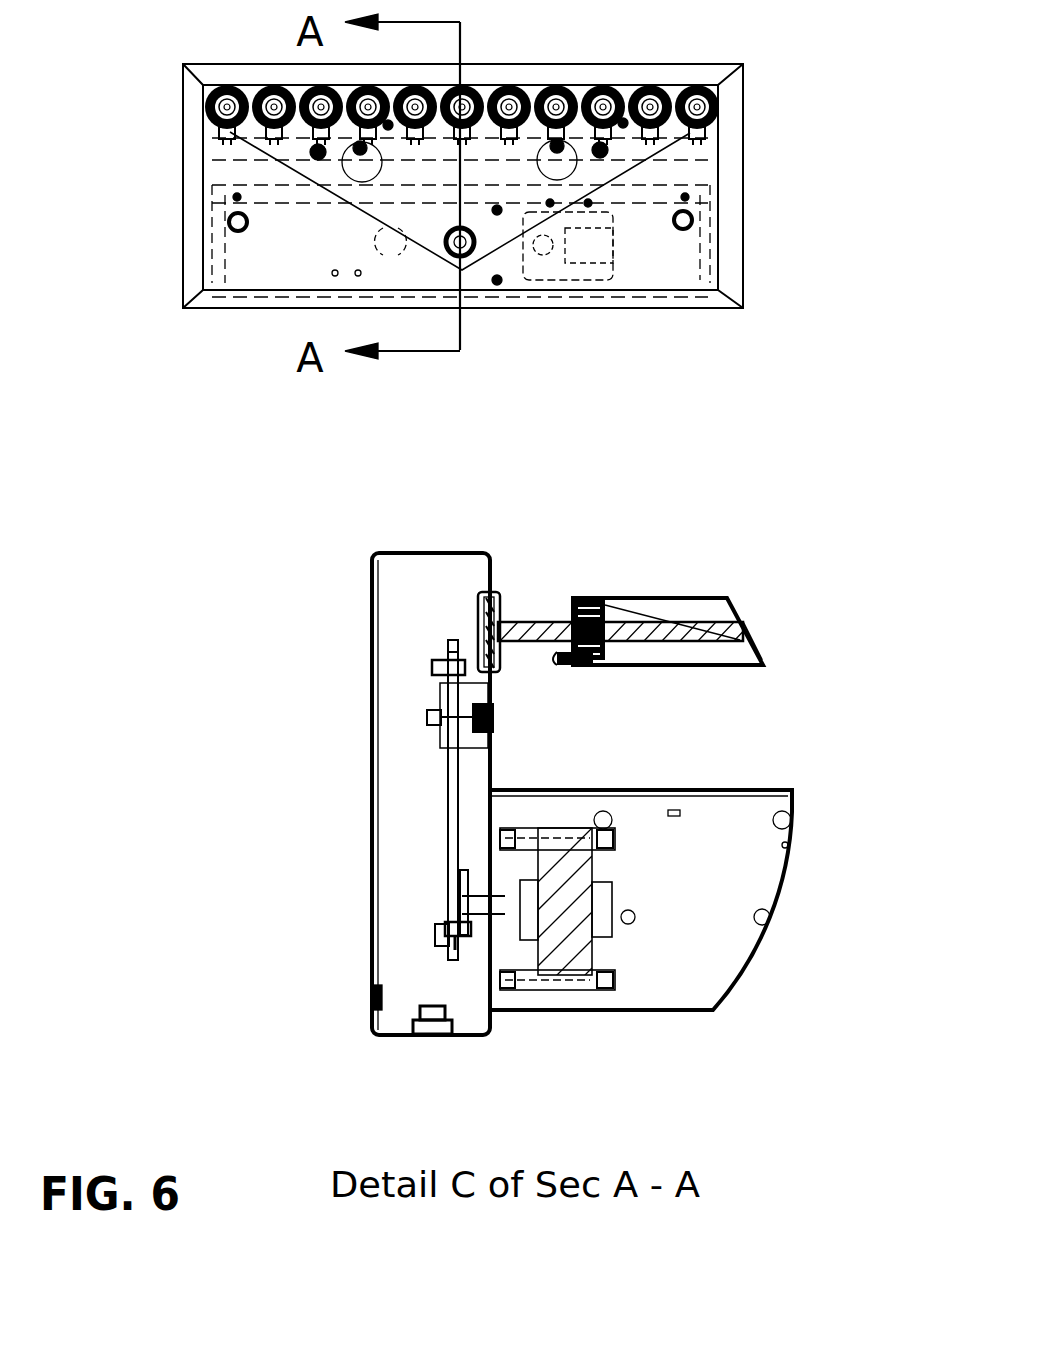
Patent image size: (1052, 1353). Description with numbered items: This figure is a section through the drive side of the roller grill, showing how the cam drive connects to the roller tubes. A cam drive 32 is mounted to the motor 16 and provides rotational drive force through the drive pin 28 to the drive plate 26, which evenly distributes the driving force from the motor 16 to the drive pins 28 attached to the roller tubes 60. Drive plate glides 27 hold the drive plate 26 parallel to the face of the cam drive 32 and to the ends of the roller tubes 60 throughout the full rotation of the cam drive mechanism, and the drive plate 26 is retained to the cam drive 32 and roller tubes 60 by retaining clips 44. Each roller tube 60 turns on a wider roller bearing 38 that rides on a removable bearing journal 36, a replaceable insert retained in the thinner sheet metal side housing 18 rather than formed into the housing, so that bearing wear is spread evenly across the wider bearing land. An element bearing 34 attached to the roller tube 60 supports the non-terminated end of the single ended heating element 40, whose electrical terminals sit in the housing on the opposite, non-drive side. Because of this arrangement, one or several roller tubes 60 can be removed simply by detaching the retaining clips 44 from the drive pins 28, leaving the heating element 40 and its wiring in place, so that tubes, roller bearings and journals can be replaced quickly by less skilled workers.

The motor 16 is at (635, 918).
The side housing 18 is at (370, 562).
The drive plate 26 is at (445, 853).
The drive plate glides 27 is at (445, 747).
The drive pin 28 is at (570, 665).
The cam drive 32 is at (537, 978).
The element bearing 34 is at (605, 612).
The bearing journal 36 is at (488, 595).
The roller bearing 38 is at (492, 623).
The single ended heating element 40 is at (527, 623).
The retaining clip 44 is at (450, 648).
The roller tube 60 is at (645, 598).